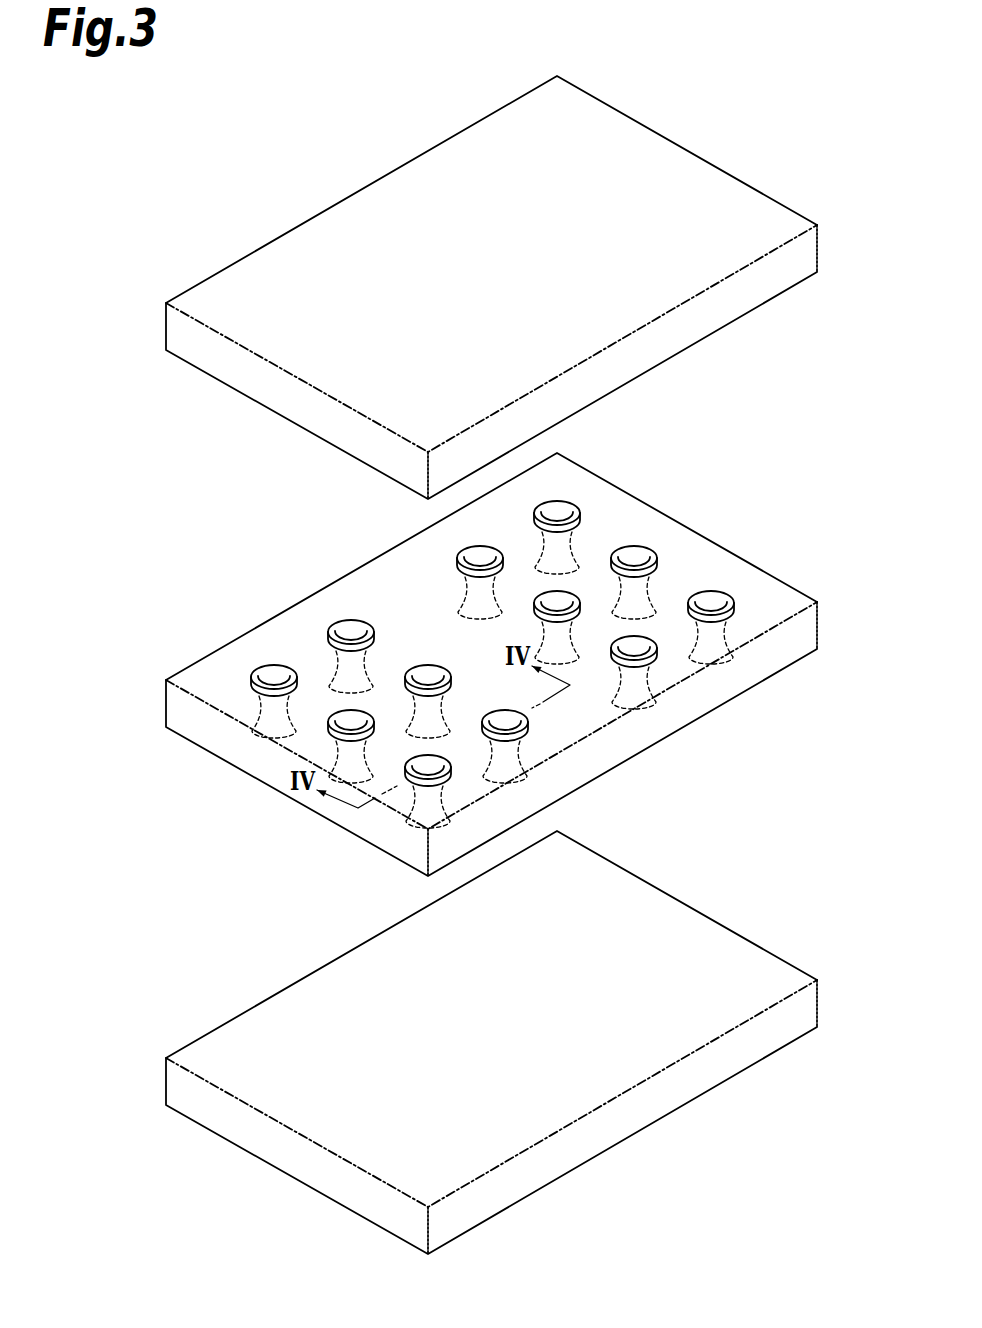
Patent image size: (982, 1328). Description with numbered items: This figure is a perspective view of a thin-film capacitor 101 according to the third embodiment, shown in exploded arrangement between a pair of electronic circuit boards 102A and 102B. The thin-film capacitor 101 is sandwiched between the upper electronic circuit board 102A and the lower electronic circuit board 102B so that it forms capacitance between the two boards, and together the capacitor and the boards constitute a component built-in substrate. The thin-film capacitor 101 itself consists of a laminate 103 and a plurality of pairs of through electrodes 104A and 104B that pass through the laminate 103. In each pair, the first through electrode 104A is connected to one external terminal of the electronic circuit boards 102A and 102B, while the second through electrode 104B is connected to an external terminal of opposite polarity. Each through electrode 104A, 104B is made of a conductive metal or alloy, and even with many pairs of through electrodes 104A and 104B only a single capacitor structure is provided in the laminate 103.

The thin-film capacitor 101 is at (442, 652).
The electronic circuit board 102A is at (183, 203).
The electronic circuit board 102B is at (183, 962).
The laminate 103 is at (166, 697).
The first through electrode 104A is at (722, 737).
The second through electrode 104B is at (560, 500).